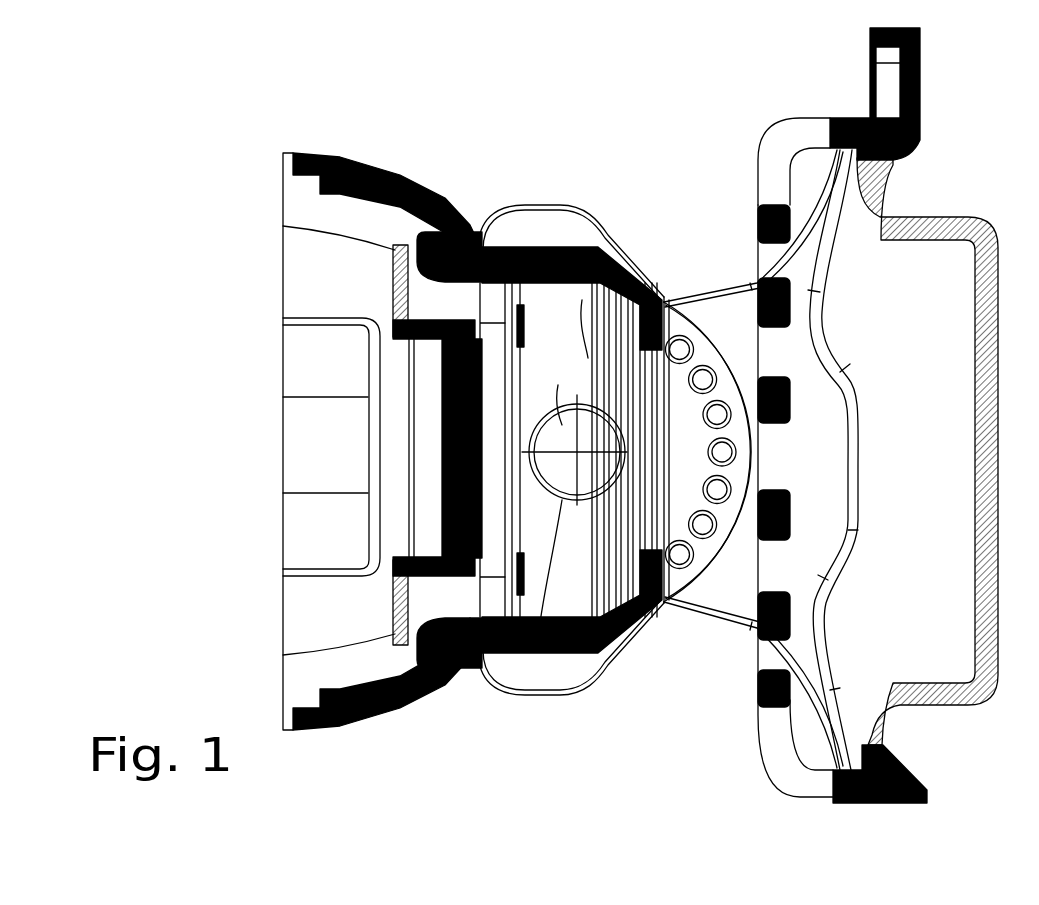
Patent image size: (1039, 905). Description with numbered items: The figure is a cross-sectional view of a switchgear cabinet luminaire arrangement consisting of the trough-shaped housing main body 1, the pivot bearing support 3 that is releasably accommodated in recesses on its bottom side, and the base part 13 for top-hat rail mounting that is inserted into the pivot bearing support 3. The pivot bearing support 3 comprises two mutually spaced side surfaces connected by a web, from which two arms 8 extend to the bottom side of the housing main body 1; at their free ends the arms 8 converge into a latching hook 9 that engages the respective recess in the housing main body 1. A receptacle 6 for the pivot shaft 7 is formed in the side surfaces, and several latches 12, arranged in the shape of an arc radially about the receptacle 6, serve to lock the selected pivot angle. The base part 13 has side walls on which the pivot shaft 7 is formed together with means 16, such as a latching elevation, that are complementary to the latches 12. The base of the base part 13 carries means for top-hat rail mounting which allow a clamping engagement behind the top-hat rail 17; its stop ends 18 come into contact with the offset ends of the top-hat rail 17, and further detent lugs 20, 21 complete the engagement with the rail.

The housing main body 1 is at (365, 170).
The pivot bearing support 3 is at (553, 232).
The receptacle 6 is at (538, 640).
The pivot shaft 7 is at (587, 242).
The arms 8 is at (508, 247).
The latching hook 9 is at (450, 235).
The latches 12 is at (680, 340).
The base part 13 is at (722, 276).
The means complementary to the latches 16 is at (720, 455).
The top-hat rail 17 is at (940, 225).
The stop ends 18 is at (846, 243).
The detent lug 20 is at (920, 72).
The detent lug 21 is at (903, 770).